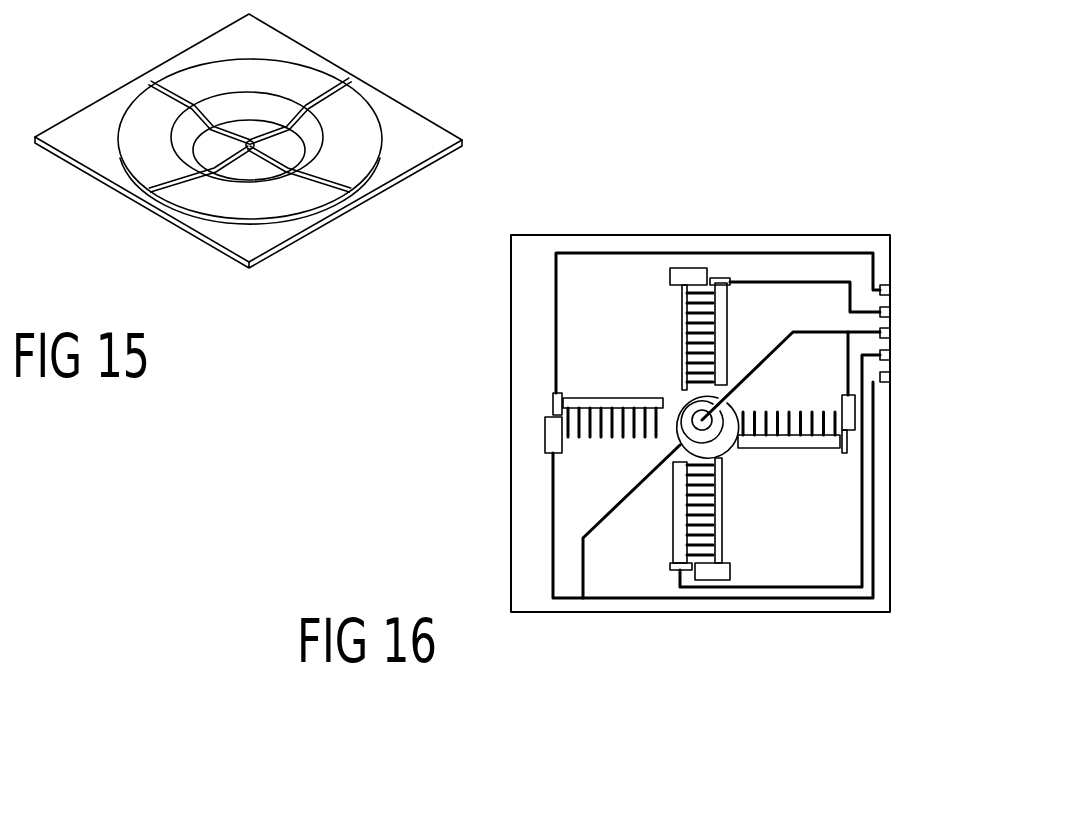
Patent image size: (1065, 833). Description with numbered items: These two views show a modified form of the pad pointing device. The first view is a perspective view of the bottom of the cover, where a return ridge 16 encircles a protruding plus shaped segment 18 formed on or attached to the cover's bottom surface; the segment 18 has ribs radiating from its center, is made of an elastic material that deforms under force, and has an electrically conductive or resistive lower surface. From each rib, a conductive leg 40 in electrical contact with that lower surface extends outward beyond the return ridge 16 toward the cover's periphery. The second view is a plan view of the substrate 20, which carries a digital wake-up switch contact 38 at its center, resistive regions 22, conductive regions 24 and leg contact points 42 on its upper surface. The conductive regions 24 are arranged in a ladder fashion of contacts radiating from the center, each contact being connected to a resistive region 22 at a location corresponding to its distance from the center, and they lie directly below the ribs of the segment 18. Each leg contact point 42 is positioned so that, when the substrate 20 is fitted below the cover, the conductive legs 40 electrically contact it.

In FIG. 15, the return ridge 16 is at (190, 130).
In FIG. 15, the protruding plus shaped segment 18 is at (243, 153).
In FIG. 15, the conductive leg 40 is at (325, 92).
In FIG. 16, the substrate 20 is at (785, 237).
In FIG. 16, the resistive region 22 is at (678, 530).
In FIG. 16, the conductive region 24 is at (715, 533).
In FIG. 16, the digital wake-up switch contact 38 is at (700, 418).
In FIG. 16, the leg contact point 42 is at (545, 443).